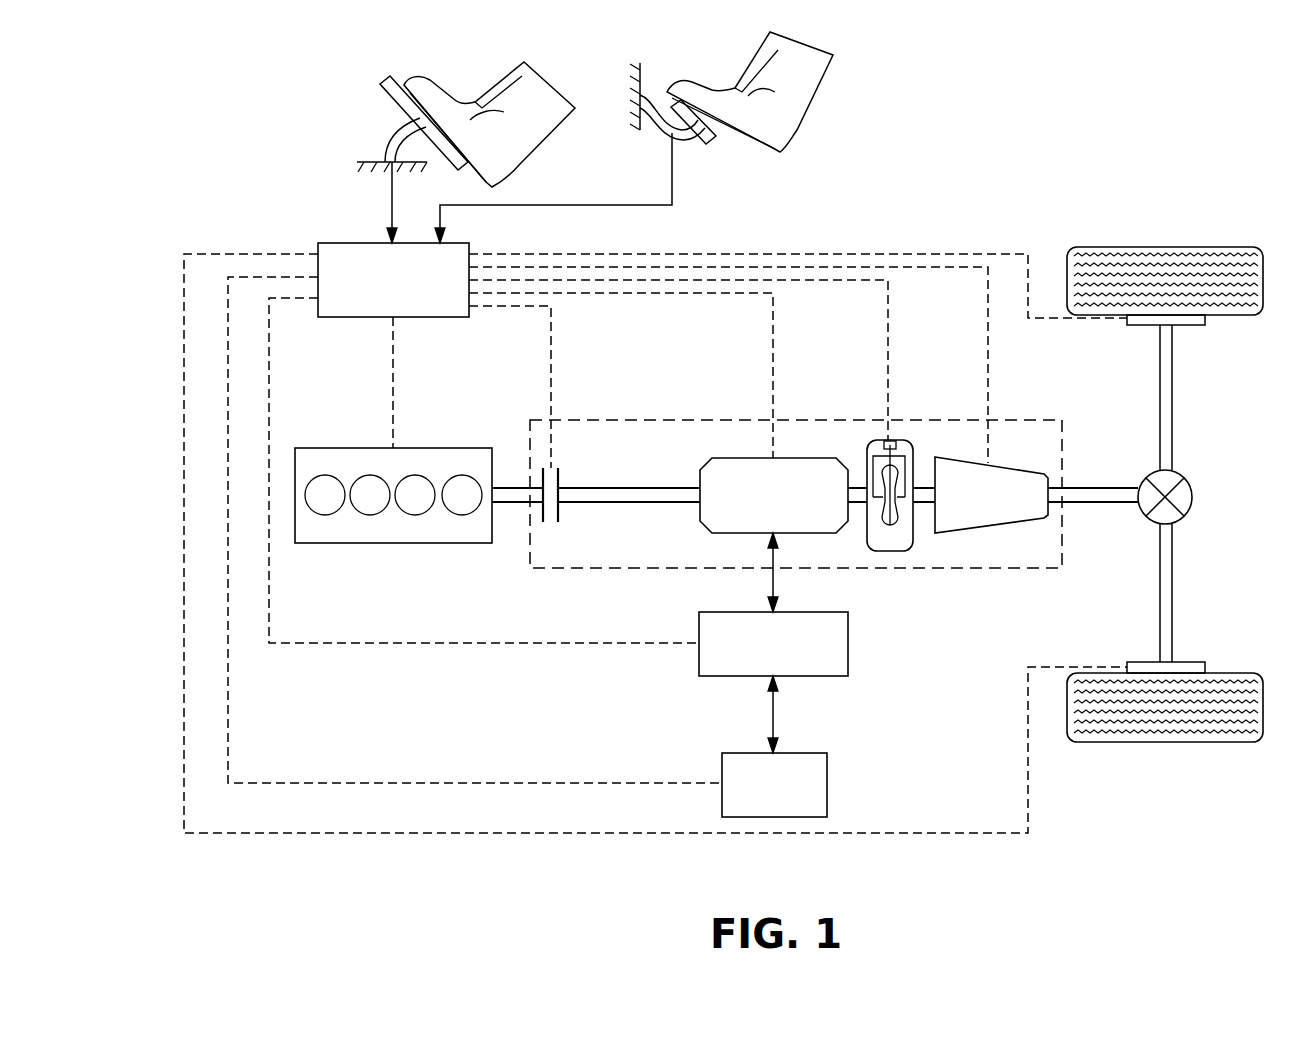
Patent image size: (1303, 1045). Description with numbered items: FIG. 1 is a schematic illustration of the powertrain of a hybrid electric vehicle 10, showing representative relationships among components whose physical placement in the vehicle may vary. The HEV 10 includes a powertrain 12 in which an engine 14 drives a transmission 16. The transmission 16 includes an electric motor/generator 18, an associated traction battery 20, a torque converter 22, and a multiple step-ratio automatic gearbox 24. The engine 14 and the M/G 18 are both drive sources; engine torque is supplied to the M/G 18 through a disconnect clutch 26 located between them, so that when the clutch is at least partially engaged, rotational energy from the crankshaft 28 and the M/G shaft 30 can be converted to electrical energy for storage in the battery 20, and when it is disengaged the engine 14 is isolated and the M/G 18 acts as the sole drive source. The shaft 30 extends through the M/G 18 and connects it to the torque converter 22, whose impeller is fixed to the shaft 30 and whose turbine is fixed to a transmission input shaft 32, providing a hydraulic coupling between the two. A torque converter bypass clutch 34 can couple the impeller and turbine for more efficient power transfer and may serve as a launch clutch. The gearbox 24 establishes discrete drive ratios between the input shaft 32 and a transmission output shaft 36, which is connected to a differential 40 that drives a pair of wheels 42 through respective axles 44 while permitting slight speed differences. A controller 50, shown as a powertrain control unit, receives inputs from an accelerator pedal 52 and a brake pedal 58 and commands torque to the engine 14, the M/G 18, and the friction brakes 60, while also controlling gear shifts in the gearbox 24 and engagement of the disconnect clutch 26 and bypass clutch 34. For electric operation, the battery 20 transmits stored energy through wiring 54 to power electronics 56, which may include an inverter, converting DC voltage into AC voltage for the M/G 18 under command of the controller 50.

The hybrid electric vehicle 10 is at (921, 162).
The powertrain 12 is at (541, 668).
The engine 14 is at (350, 448).
The transmission 16 is at (852, 420).
The electric motor/generator 18 is at (742, 458).
The traction battery 20 is at (827, 780).
The torque converter 22 is at (885, 551).
The gearbox 24 is at (992, 528).
The disconnect clutch 26 is at (560, 480).
The crankshaft 28 is at (542, 488).
The M/G shaft 30 is at (640, 488).
The transmission input shaft 32 is at (922, 485).
The torque converter bypass clutch 34 is at (889, 440).
The transmission output shaft 36 is at (1105, 488).
The differential 40 is at (1192, 497).
The wheels 42 is at (1165, 247).
The axles 44 is at (1172, 395).
The controller 50 is at (350, 243).
The accelerator pedal 52 is at (395, 116).
The wiring 54 is at (776, 720).
The power electronics 56 is at (848, 643).
The brake pedal 58 is at (712, 140).
The friction brakes 60 is at (1205, 318).